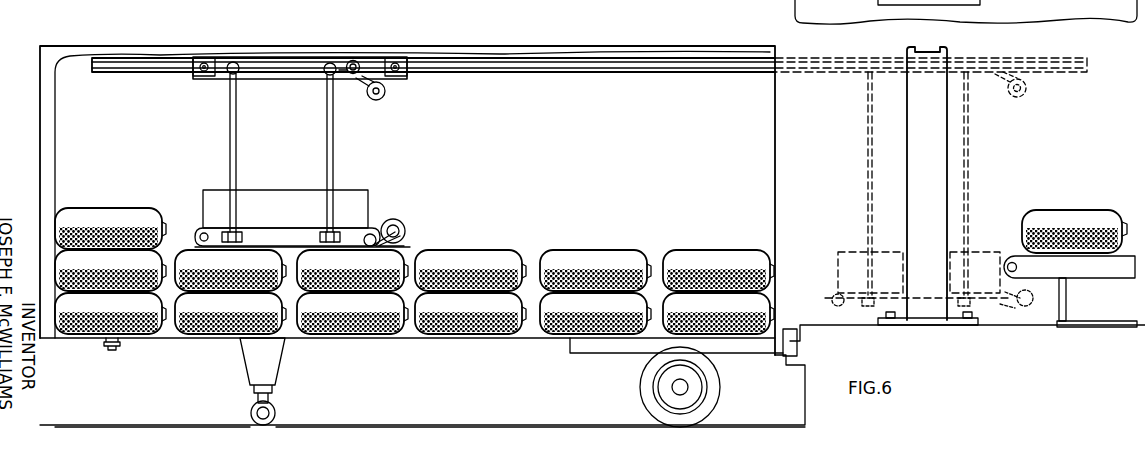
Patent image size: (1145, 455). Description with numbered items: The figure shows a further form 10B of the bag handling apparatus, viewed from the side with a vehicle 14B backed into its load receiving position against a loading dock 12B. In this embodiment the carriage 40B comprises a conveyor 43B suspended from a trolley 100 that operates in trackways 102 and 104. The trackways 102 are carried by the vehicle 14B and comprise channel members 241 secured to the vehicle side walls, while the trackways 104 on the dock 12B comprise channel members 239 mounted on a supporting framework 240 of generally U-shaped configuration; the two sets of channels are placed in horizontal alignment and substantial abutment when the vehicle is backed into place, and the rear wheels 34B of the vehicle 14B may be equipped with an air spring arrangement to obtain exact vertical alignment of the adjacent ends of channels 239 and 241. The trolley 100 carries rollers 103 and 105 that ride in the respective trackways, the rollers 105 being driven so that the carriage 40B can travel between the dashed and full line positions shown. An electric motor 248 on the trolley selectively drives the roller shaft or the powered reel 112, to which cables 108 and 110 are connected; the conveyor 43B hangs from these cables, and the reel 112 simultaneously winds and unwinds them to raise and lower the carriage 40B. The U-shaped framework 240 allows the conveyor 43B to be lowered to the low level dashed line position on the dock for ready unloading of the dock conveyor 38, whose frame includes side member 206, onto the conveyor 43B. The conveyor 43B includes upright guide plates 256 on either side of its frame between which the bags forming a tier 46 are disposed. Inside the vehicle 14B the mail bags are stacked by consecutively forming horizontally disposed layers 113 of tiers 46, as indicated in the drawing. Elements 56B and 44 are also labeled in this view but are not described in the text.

The form of the invention 10B is at (32, 52).
The carriage 40B is at (494, 148).
The vehicle 14B is at (598, 45).
The trackway 102 is at (690, 68).
The trackway 104 is at (812, 60).
The trolley 100 is at (392, 44).
The roller 103 is at (205, 66).
The powered reel 112 is at (352, 62).
The roller 105 is at (400, 60).
The electric motor 248 is at (385, 95).
The cable 110 is at (237, 134).
The cable 108 is at (334, 134).
The upright guide plate 256 is at (360, 192).
The lift bar 56B is at (190, 236).
The conveyor 43B is at (408, 206).
The bags 44 is at (560, 257).
The horizontally disposed layer 113 is at (750, 302).
The rear wheel 34B is at (640, 386).
The loading dock 12B is at (1058, 330).
The supporting framework 240 is at (945, 163).
The side member 206 is at (1050, 265).
The conveyor 38 is at (1087, 262).
The tier 46 is at (1120, 212).
The channel member 239 is at (903, 7).
The channel member 241 is at (556, 6).